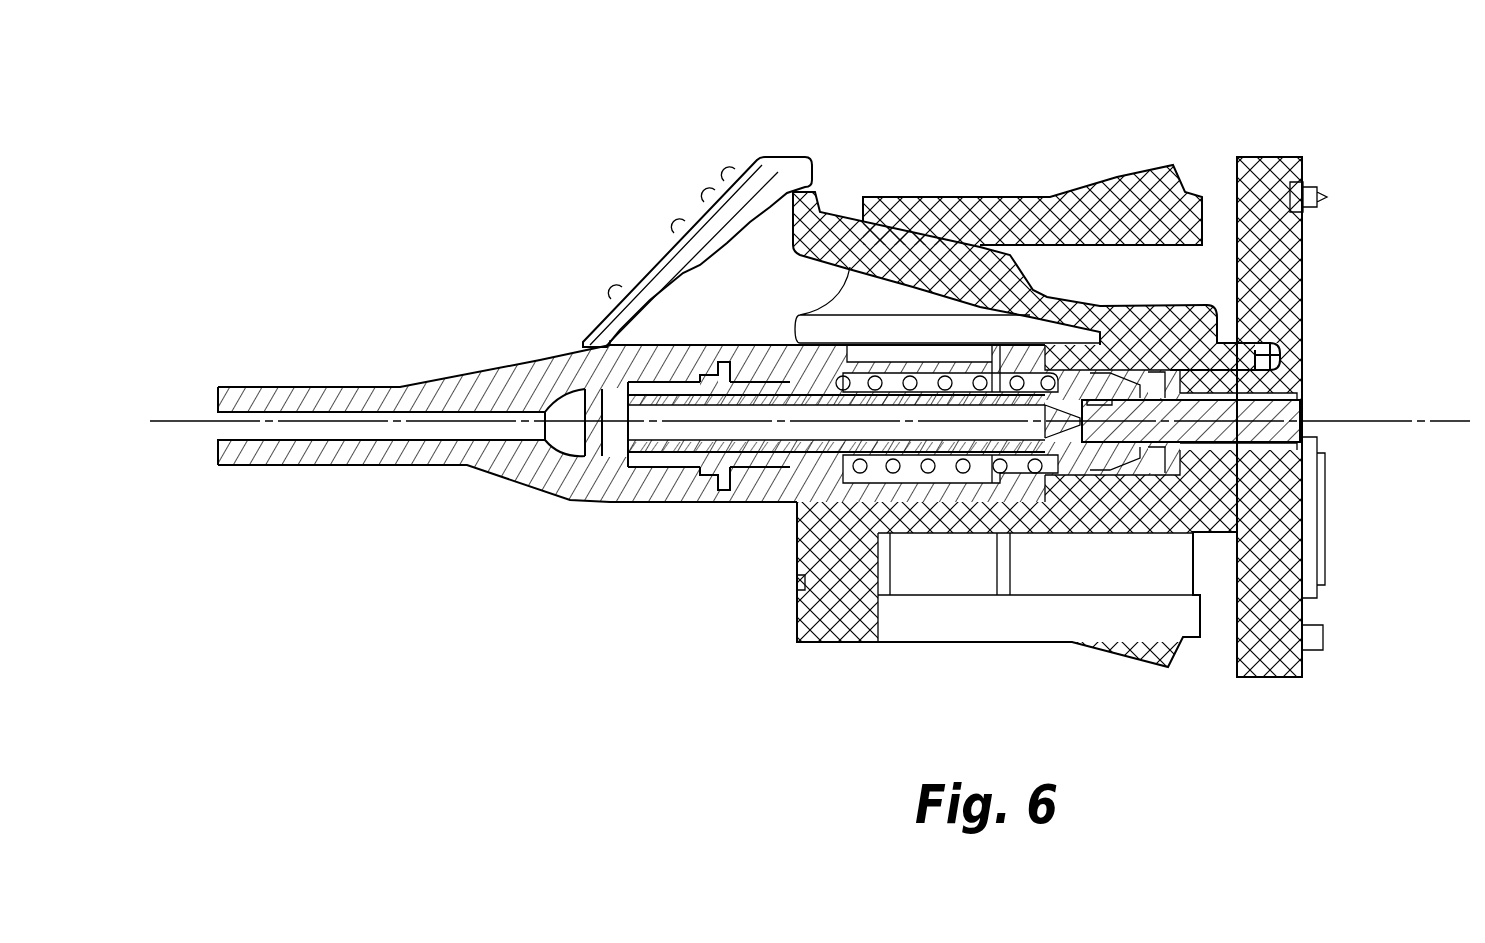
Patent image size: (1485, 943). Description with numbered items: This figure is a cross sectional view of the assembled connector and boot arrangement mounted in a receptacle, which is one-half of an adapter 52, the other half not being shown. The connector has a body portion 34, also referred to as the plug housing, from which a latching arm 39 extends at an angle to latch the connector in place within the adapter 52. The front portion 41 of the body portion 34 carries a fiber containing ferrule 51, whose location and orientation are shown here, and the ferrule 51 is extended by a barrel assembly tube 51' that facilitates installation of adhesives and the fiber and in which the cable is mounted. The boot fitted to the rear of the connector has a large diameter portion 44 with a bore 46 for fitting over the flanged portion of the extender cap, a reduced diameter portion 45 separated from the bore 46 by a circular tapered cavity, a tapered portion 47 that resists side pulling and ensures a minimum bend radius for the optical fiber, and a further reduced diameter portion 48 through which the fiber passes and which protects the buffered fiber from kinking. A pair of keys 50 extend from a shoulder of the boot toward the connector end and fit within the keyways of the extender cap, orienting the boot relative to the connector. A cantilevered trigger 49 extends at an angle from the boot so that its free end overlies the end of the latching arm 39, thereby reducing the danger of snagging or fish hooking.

The body portion 34 is at (798, 500).
The latching arm 39 is at (840, 213).
The front portion 41 is at (1282, 347).
The large diameter portion 44 is at (670, 347).
The reduced diameter portion 45 is at (595, 393).
The bore 46 is at (752, 473).
The tapered portion 47 is at (467, 481).
The reduced diameter portion 48 is at (305, 388).
The cantilevered trigger 49 is at (767, 157).
The keys 50 is at (716, 365).
The ferrule 51 is at (1252, 409).
The barrel assembly tube 51' is at (826, 352).
The adapter 52 is at (1276, 157).